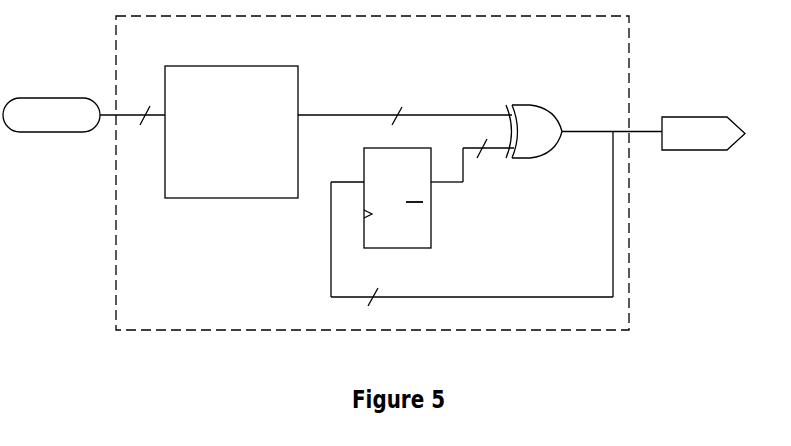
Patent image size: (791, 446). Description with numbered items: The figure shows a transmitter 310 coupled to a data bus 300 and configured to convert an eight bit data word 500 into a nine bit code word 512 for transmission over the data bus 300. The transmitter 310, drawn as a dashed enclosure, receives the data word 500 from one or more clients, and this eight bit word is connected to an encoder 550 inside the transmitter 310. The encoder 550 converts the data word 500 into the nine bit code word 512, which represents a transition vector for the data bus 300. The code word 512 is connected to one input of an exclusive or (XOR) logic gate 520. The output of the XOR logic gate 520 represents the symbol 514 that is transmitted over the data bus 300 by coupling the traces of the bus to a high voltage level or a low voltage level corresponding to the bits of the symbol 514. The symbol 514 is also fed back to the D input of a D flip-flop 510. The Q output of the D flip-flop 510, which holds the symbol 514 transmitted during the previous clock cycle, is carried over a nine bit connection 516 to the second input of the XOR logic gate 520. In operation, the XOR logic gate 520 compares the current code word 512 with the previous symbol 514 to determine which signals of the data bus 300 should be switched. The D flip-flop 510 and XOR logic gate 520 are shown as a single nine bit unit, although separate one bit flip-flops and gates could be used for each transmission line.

The data bus 300 is at (700, 143).
The transmitter 310 is at (262, 45).
The data word 500 is at (33, 98).
The D flip-flop 510 is at (432, 242).
The code word 512 is at (325, 113).
The symbol 514 is at (578, 131).
The feedback bus 516 is at (455, 184).
The exclusive or (XOR) logic gate 520 is at (513, 158).
The encoder 550 is at (247, 153).